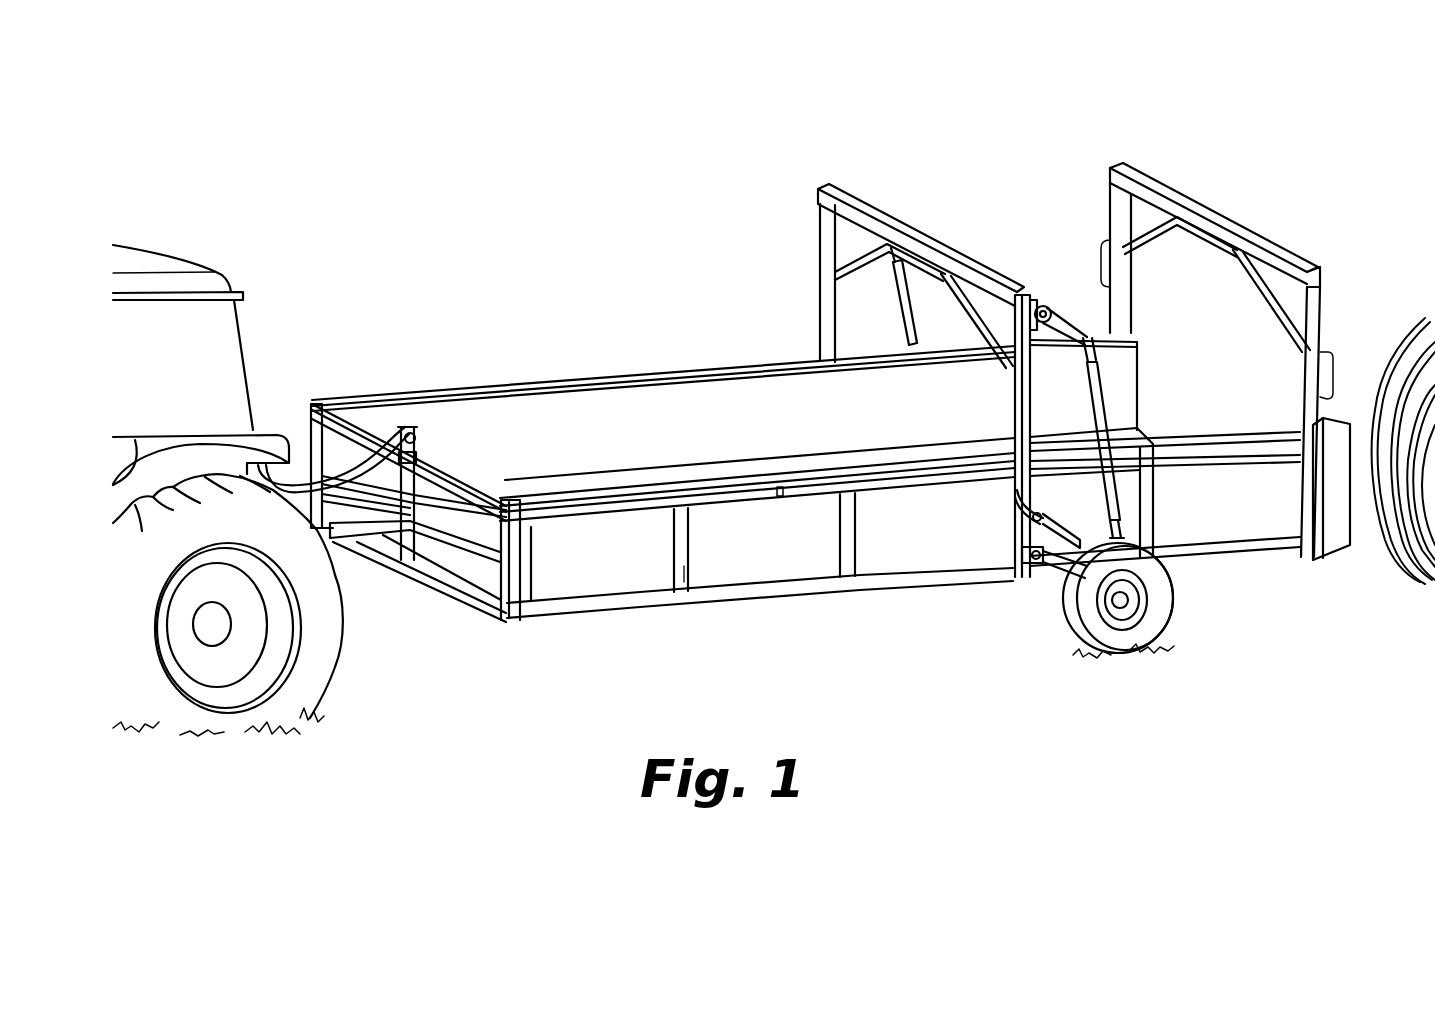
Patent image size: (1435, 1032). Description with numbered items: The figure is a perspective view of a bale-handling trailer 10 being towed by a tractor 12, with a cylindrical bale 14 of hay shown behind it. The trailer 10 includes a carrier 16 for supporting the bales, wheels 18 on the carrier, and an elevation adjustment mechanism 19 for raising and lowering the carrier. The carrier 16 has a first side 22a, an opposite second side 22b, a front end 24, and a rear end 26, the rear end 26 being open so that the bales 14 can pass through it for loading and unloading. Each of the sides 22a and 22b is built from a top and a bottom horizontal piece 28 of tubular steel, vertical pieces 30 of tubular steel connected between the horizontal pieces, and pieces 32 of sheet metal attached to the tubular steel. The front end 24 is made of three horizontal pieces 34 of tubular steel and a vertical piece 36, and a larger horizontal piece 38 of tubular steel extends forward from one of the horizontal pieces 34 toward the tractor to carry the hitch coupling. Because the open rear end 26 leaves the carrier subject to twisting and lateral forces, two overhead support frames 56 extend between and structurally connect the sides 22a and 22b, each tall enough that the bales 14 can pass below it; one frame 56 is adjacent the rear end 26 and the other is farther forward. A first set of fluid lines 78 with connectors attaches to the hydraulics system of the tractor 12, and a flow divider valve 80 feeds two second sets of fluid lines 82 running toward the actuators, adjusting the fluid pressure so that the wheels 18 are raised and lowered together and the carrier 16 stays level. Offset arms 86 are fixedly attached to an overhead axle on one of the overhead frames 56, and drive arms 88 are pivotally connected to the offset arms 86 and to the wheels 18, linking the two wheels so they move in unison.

The trailer 10 is at (621, 254).
The tractor 12 is at (206, 232).
The cylindrical bales 14 is at (1411, 322).
The carrier 16 is at (501, 380).
The wheels 18 is at (1190, 598).
The elevation adjustment mechanism 19 is at (1025, 601).
The first side 22a is at (752, 569).
The second side 22b is at (752, 358).
The front end 24 is at (478, 608).
The rear end 26 is at (1231, 391).
The horizontal pieces 28 is at (648, 382).
The vertical pieces 30 is at (686, 585).
The sheet metal pieces 32 is at (740, 434).
The horizontal pieces 34 is at (433, 460).
The vertical piece 36 is at (428, 492).
The horizontal piece 38 is at (342, 543).
The overhead support frame 56 is at (856, 186).
The first set of fluid lines 78 is at (300, 472).
The flow divider valve 80 is at (414, 423).
The second sets of fluid lines 82 is at (332, 420).
The offset arms 86 is at (1074, 318).
The drive arms 88 is at (892, 292).